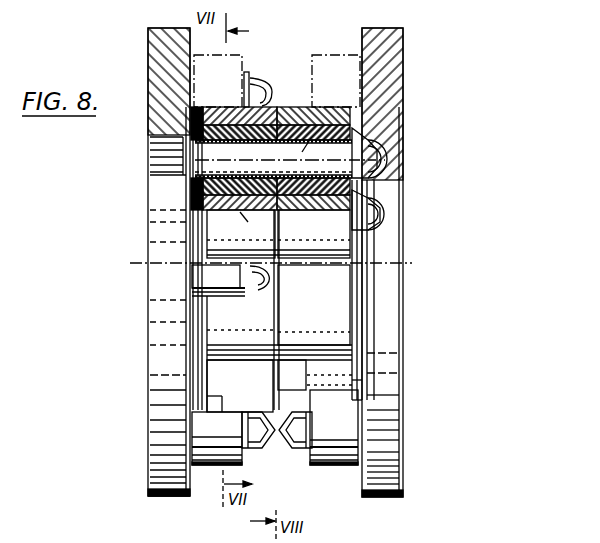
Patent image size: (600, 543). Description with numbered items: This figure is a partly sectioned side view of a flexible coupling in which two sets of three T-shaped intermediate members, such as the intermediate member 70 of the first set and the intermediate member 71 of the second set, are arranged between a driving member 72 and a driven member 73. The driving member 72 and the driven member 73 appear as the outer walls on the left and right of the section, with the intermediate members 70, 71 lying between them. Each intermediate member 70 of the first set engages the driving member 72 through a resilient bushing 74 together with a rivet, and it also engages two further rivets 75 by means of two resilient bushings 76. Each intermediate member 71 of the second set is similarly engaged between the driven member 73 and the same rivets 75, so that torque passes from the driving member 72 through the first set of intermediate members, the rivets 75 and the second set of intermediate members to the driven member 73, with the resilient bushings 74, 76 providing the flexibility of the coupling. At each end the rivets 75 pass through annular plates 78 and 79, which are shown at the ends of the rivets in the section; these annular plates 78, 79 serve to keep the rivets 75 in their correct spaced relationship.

The T-shaped intermediate member 70 is at (205, 467).
The T-shaped intermediate member 71 is at (335, 467).
The driving member 72 is at (156, 403).
The driven member 73 is at (396, 392).
The resilient bushing 74 is at (158, 519).
The rivet 75 is at (319, 127).
The resilient bushing 76 is at (212, 127).
The annular plate 78 is at (196, 185).
The annular plate 79 is at (384, 210).